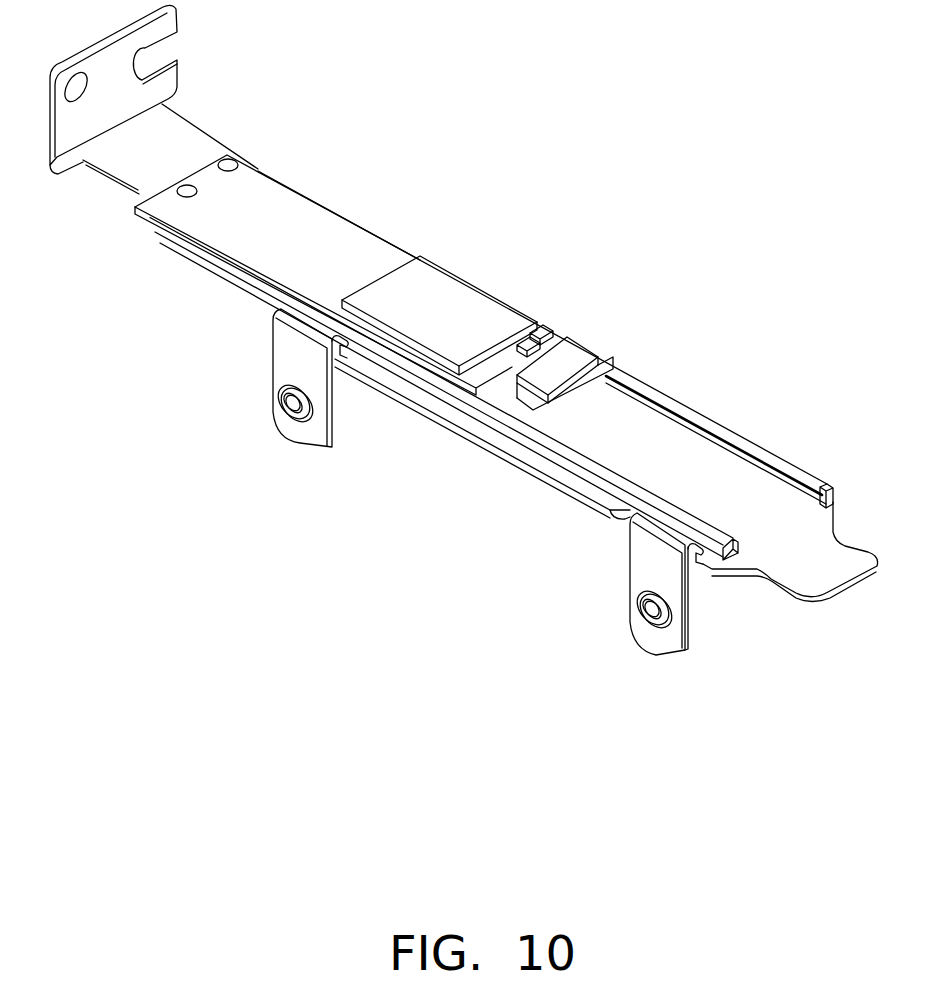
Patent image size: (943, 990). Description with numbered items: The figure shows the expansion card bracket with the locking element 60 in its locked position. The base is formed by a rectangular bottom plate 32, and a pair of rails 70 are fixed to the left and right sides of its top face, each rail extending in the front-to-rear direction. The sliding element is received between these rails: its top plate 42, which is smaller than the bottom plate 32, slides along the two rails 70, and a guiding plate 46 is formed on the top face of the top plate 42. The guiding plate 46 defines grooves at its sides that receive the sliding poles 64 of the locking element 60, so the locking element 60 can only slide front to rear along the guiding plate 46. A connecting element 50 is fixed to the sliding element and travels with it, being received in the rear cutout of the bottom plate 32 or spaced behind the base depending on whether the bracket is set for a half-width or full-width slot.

The bottom plate 32 is at (647, 420).
The top plate 42 is at (270, 220).
The guiding plate 46 is at (444, 298).
The connecting element 50 is at (182, 147).
The locking element 60 is at (570, 355).
The sliding poles 64 is at (541, 337).
The rails 70 is at (719, 431).